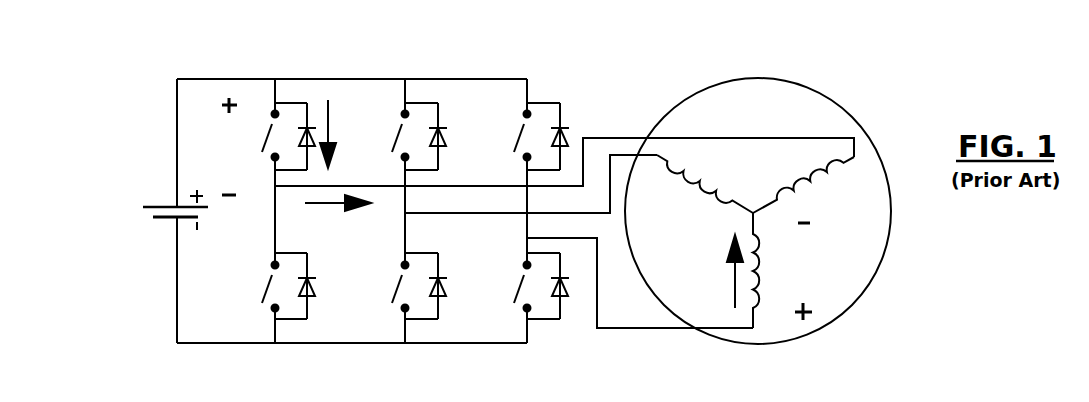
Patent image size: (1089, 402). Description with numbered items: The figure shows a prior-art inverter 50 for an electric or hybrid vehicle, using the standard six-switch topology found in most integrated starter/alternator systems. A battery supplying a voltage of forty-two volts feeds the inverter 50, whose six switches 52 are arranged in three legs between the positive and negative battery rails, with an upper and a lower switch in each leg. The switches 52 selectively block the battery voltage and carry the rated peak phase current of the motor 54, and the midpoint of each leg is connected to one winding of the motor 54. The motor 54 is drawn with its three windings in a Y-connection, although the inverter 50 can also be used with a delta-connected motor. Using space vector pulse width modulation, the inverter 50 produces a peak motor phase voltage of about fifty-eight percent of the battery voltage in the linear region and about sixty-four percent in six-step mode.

The inverter 50 is at (557, 63).
The switches 52 is at (304, 102).
The motor 54 is at (805, 63).